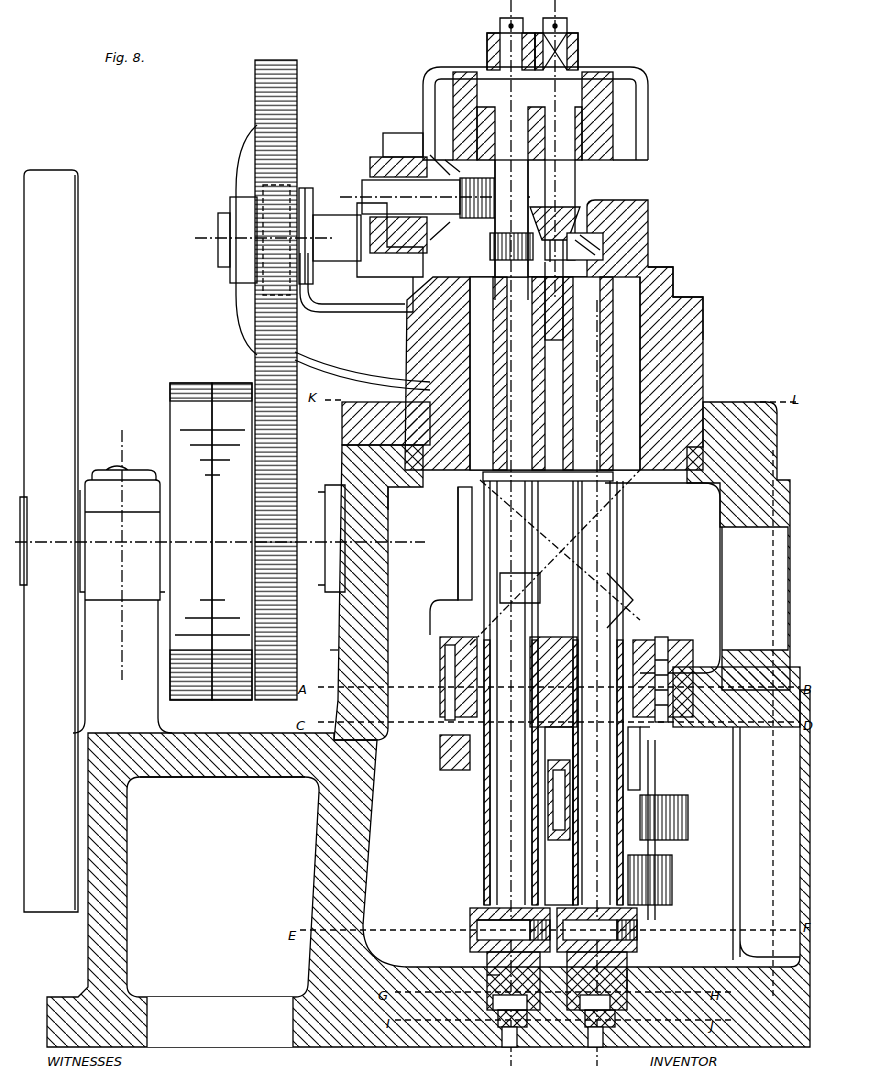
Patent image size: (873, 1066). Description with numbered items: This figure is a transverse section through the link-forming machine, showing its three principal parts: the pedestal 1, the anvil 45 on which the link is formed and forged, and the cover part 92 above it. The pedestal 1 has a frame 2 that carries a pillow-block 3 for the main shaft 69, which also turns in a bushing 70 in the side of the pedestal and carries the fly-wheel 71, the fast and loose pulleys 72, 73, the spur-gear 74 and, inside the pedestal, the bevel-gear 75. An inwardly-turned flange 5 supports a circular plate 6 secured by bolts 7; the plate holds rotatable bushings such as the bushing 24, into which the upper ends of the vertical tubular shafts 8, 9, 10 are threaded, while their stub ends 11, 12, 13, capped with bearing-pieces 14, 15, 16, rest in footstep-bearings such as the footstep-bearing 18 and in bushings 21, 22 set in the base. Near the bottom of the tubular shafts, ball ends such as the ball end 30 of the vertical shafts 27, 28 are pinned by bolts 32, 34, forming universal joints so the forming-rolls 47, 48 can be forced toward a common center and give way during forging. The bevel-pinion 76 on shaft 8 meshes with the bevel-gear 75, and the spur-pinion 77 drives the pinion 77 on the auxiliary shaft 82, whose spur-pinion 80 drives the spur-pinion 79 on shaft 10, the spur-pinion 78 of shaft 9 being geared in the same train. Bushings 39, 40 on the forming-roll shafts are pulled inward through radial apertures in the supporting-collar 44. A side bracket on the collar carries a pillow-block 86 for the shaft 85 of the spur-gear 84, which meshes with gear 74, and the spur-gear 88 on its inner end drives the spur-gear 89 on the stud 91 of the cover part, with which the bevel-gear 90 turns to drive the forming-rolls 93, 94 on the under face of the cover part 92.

The pedestal 1 is at (338, 870).
The frame 2 is at (190, 770).
The pillow-block 3 is at (143, 480).
The inwardly-turned flange 5 is at (700, 720).
The circular plate 6 is at (645, 648).
The bolts 7 is at (662, 650).
The vertical tubular shaft 8 is at (565, 868).
The vertical tubular shaft 9 is at (483, 845).
The vertical tubular shaft 10 is at (620, 748).
The stub end 11 is at (644, 733).
The stub end 12 is at (492, 966).
The stub end 13 is at (612, 970).
The bearing-piece 14 is at (598, 1030).
The bearing-piece 15 is at (520, 1002).
The bearing-piece 16 is at (610, 1003).
The footstep-bearing 18 is at (512, 1030).
The bushing 21 is at (487, 978).
The bushing 22 is at (592, 981).
The rotatable bushing 24 is at (478, 648).
The vertical shaft 27 is at (498, 810).
The vertical shaft 28 is at (595, 520).
The ball end 30 is at (495, 908).
The bolt 32 is at (503, 928).
The bolt 34 is at (640, 934).
The bushing 39 is at (500, 367).
The bushing 40 is at (615, 367).
The supporting-collar 44 is at (752, 402).
The anvil 45 is at (662, 293).
The forming-roll 47 is at (545, 258).
The forming-roll 48 is at (600, 258).
The main shaft 69 is at (308, 505).
The bushing 70 is at (418, 585).
The fly-wheel 71 is at (55, 188).
The fast pulley 72 is at (188, 400).
The loose pulley 73 is at (233, 400).
The spur-gear 74 is at (330, 656).
The bevel-gear 75 is at (485, 542).
The bevel-pinion 76 is at (612, 612).
The spur-pinion 77 is at (660, 873).
The spur-pinion 78 is at (465, 756).
The spur-pinion 79 is at (555, 800).
The spur-pinion 80 is at (680, 803).
The auxiliary shaft 82 is at (655, 913).
The spur-gear 84 is at (280, 75).
The shaft 85 is at (340, 225).
The pillow-block 86 is at (306, 190).
The spur-gear 88 is at (367, 262).
The spur-gear 89 is at (396, 140).
The bevel-gear 90 is at (455, 232).
The stud 91 is at (458, 215).
The cover part 92 is at (633, 225).
The forming-roll 93 is at (505, 255).
The forming-roll 94 is at (570, 214).